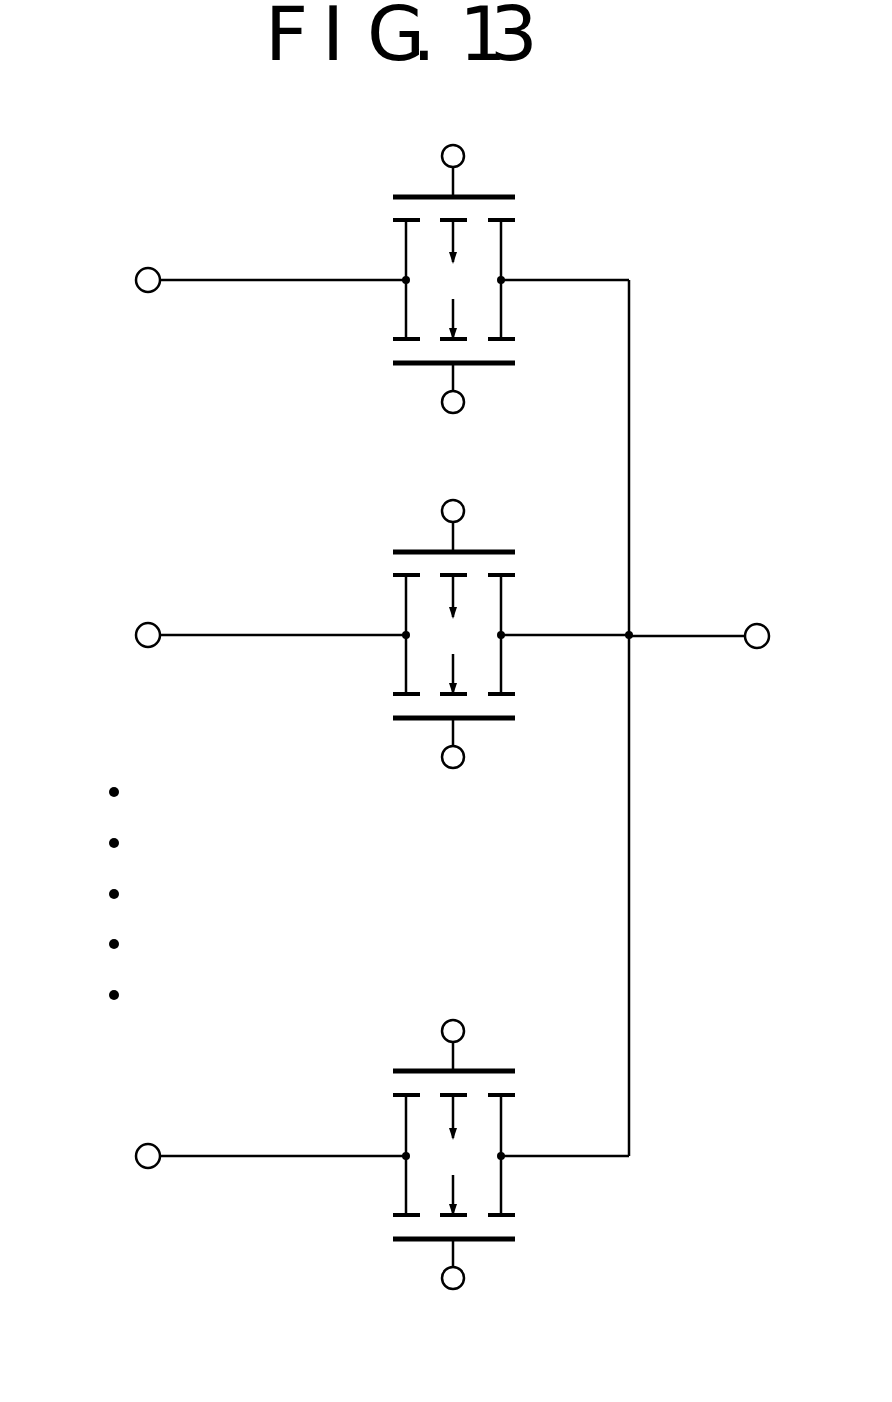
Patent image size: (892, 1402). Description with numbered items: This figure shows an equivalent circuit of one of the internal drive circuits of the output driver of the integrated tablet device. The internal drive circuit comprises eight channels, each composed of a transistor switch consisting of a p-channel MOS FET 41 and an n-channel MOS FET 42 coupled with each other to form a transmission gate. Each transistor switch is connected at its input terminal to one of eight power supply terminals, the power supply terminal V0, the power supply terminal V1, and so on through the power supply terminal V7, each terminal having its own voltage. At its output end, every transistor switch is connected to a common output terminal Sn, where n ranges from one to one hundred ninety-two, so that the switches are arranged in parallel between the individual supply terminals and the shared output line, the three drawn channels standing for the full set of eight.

The p-channel MOS FET 41 is at (406, 320).
The n-channel MOS FET 42 is at (406, 252).
The power supply terminal V0 is at (251, 281).
The power supply terminal V1 is at (252, 636).
The power supply terminal V7 is at (251, 1157).
The common output terminal Sn is at (722, 638).